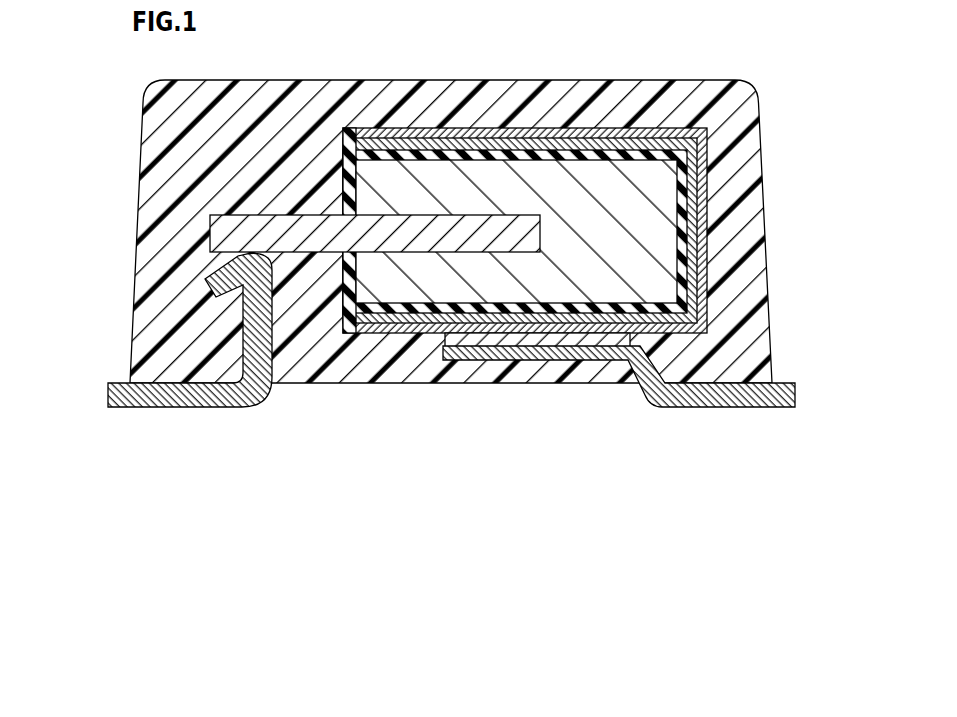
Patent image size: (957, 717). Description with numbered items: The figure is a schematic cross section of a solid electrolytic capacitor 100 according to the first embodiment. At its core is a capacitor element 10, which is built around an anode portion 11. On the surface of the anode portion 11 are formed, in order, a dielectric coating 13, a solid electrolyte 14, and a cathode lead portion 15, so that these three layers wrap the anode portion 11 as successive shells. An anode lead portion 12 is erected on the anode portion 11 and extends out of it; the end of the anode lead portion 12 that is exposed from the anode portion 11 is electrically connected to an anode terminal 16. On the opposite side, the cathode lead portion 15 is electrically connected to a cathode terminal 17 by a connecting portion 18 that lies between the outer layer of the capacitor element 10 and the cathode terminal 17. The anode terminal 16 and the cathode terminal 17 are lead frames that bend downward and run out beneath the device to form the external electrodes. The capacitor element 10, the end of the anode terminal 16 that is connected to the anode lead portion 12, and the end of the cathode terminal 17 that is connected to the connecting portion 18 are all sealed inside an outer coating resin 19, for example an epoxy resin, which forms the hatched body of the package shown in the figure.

The solid electrolytic capacitor 100 is at (783, 48).
The capacitor element 10 is at (536, 230).
The anode portion 11 is at (660, 267).
The anode lead portion 12 is at (542, 232).
The dielectric coating 13 is at (683, 211).
The solid electrolyte 14 is at (692, 187).
The cathode lead portion 15 is at (702, 153).
The anode terminal 16 is at (125, 404).
The cathode terminal 17 is at (760, 393).
The connecting portion 18 is at (622, 341).
The outer coating resin 19 is at (145, 162).